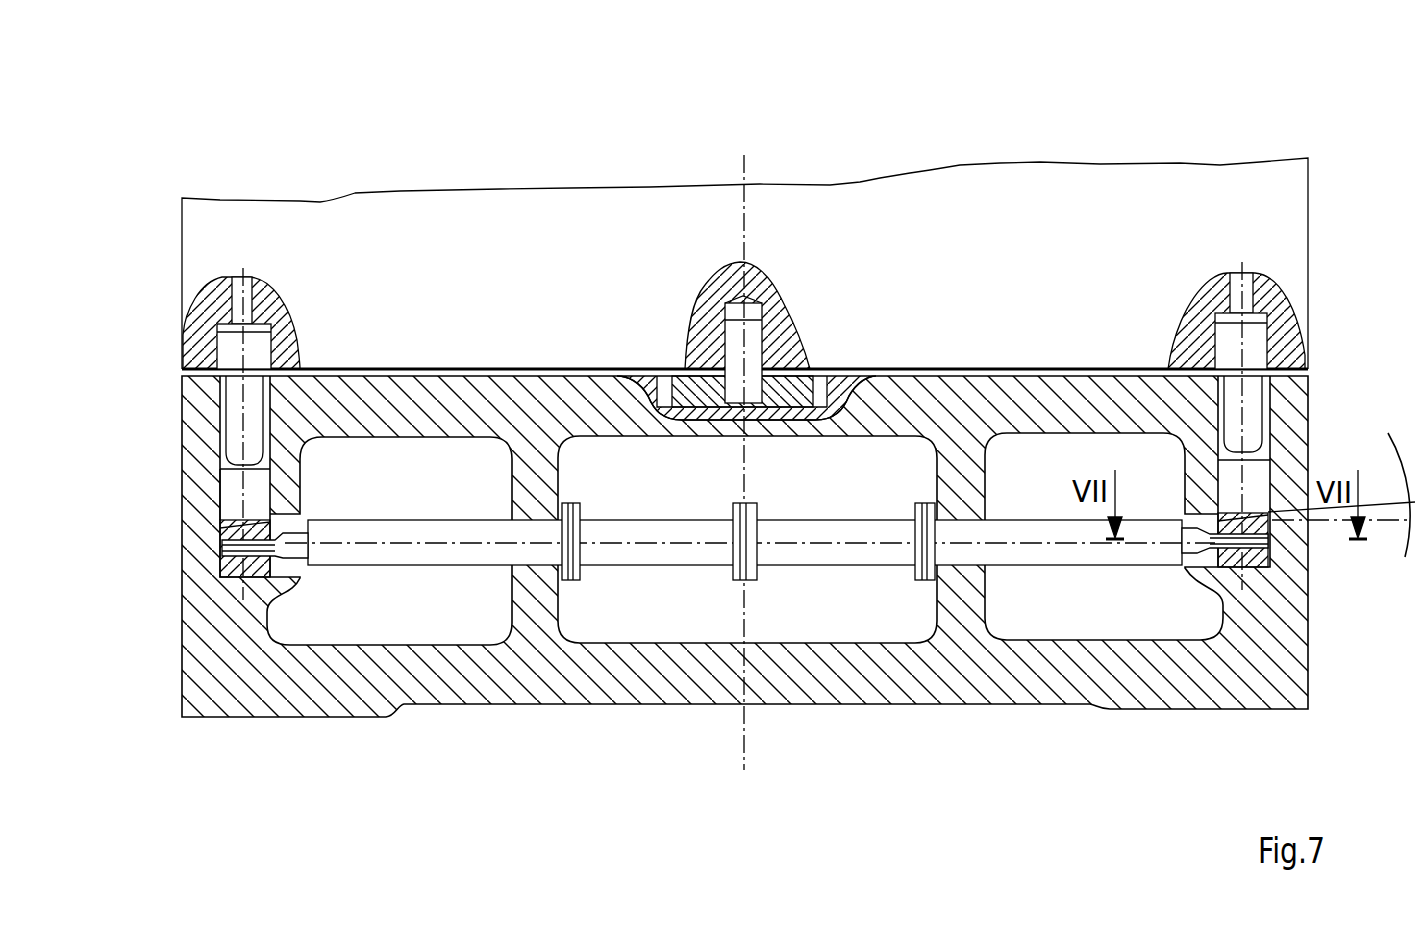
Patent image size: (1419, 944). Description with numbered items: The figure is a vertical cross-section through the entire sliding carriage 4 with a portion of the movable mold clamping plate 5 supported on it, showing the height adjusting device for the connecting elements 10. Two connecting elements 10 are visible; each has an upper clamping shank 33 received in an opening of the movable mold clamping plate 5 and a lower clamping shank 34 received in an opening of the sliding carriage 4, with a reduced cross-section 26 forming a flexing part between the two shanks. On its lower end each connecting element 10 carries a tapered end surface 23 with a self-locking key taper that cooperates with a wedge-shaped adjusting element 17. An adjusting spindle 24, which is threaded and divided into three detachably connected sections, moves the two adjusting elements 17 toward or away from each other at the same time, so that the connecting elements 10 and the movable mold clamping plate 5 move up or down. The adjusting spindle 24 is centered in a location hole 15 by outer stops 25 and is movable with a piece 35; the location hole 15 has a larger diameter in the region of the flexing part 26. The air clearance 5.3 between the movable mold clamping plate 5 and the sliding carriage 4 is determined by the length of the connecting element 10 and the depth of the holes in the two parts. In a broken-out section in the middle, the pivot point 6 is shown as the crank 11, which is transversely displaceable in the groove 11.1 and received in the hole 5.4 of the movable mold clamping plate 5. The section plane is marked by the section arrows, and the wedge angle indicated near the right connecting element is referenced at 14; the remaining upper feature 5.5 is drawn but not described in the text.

The sliding carriage 4 is at (517, 663).
The movable mold clamping plate 5 is at (380, 260).
The air clearance 5.3 is at (488, 370).
The hole 5.4 is at (752, 359).
The side fastening stud 5.5 is at (218, 324).
The pivot point 6 is at (783, 311).
The connecting element 10 is at (1230, 342).
The crank 11 is at (815, 369).
The groove 11.1 is at (668, 392).
The section plane indication 14 is at (1341, 495).
The location hole 15 is at (218, 513).
The wedge-shaped adjusting element 17 is at (223, 562).
The tapered end surface 23 is at (1268, 517).
The adjusting spindle 24 is at (1033, 548).
The outer stop 25 is at (222, 548).
The reduced cross-section 26 is at (220, 422).
The upper clamping shank 33 is at (255, 344).
The lower clamping shank 34 is at (235, 490).
The piece 35 is at (742, 582).